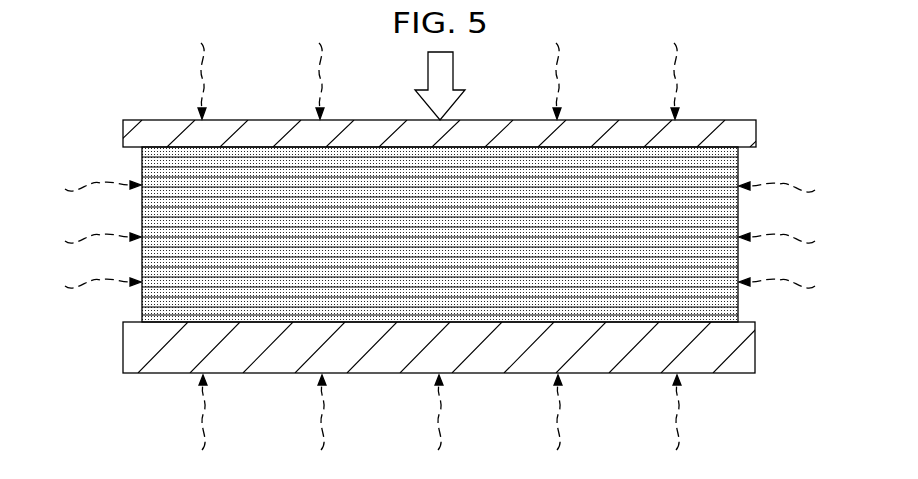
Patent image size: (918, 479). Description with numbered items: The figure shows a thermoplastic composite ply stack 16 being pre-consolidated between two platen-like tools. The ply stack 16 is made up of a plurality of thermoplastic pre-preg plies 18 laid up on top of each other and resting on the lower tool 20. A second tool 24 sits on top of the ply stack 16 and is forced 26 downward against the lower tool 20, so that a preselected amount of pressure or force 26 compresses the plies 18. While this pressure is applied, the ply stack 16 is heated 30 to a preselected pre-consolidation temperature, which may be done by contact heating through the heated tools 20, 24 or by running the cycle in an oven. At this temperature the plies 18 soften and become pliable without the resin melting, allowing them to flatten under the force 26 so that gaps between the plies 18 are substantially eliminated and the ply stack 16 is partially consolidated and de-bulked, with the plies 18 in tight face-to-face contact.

The ply stack 16 is at (404, 234).
The thermoplastic pre-preg plies 18 is at (730, 225).
The lower tool 20 is at (172, 366).
The second tool 24 is at (163, 128).
The force 26 is at (455, 73).
The heat 30 is at (559, 62).